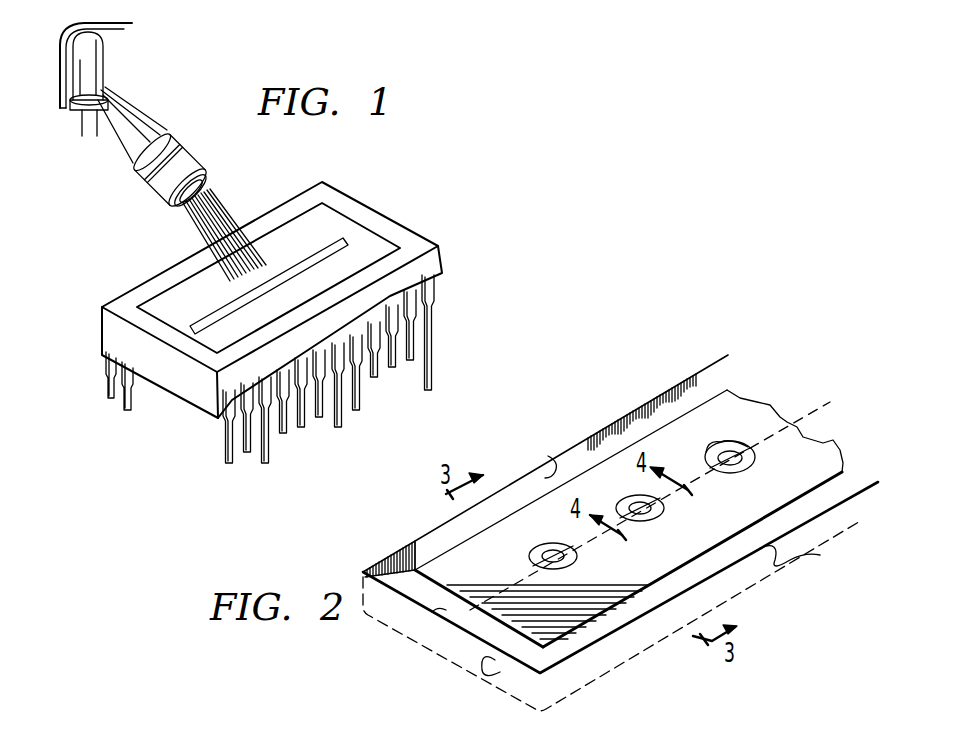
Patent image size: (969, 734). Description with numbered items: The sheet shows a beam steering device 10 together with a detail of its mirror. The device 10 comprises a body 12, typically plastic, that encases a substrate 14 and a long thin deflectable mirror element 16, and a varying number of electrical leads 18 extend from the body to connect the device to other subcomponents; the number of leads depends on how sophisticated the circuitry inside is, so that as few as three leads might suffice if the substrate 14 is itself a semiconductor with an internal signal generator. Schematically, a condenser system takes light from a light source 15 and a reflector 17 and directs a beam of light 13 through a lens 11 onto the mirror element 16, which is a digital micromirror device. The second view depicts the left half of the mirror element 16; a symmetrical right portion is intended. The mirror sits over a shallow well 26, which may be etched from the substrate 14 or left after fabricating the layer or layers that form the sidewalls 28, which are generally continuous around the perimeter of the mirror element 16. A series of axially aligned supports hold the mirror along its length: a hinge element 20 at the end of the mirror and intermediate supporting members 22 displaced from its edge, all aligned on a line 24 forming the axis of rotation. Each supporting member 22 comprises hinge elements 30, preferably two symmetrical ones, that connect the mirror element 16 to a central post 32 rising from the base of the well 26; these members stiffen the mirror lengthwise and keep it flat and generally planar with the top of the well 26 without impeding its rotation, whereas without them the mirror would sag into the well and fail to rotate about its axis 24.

In FIG. 1, the beam steering device 10 is at (118, 236).
In FIG. 1, the lens 11 is at (190, 145).
In FIG. 1, the body 12 is at (410, 234).
In FIG. 1, the beam of light 13 is at (232, 202).
In FIG. 1, the substrate 14 is at (150, 300).
In FIG. 1, the light source 15 is at (100, 60).
In FIG. 1, the mirror element 16 is at (343, 238).
In FIG. 2, the mirror element 16 is at (825, 457).
In FIG. 1, the reflector 17 is at (128, 27).
In FIG. 1, the electrical leads 18 is at (124, 410).
In FIG. 2, the hinge element 20 is at (432, 612).
In FIG. 2, the supporting members 22 is at (580, 553).
In FIG. 2, the axis of rotation 24 is at (812, 406).
In FIG. 2, the well 26 is at (413, 600).
In FIG. 2, the sidewalls 28 is at (548, 456).
In FIG. 2, the hinge element 30 is at (716, 452).
In FIG. 2, the central post 32 is at (750, 466).